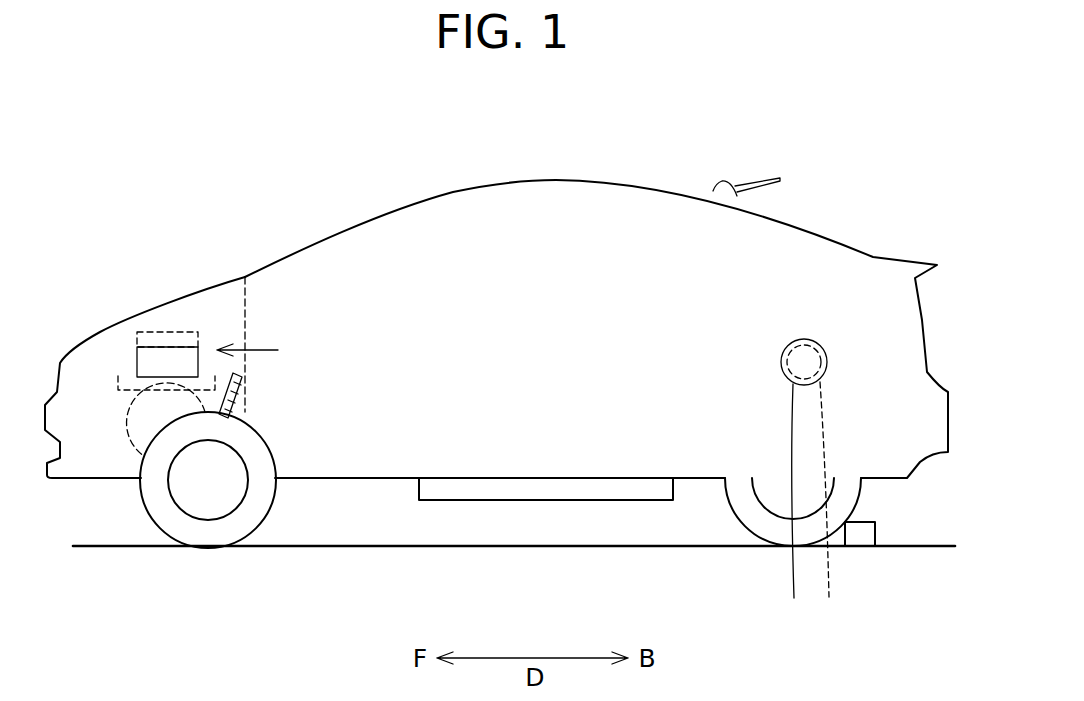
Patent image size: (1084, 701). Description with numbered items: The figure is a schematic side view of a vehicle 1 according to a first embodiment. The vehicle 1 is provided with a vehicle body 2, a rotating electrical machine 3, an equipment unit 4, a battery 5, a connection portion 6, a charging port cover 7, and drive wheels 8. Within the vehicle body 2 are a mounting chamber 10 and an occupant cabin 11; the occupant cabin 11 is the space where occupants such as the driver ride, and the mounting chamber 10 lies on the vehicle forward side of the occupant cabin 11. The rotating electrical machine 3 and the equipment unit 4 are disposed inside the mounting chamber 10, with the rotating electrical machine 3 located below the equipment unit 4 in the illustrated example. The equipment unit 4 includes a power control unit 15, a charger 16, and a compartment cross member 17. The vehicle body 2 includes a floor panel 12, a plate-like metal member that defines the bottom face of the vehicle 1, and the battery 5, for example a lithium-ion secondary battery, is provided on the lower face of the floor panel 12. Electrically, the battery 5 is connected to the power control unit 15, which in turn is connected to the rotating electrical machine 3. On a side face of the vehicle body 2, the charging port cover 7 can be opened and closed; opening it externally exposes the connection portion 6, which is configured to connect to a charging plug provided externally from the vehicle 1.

The vehicle 1 is at (496, 343).
The vehicle body 2 is at (556, 178).
The rotating electrical machine 3 is at (165, 458).
The equipment unit 4 is at (165, 288).
The battery 5 is at (535, 488).
The connection portion 6 is at (812, 487).
The charging port cover 7 is at (804, 484).
The drive wheels 8 is at (220, 545).
The mounting chamber 10 is at (85, 302).
The occupant cabin 11 is at (497, 215).
The floor panel 12 is at (367, 479).
The power control unit 15 is at (192, 333).
The charger 16 is at (167, 332).
The compartment cross member 17 is at (127, 377).